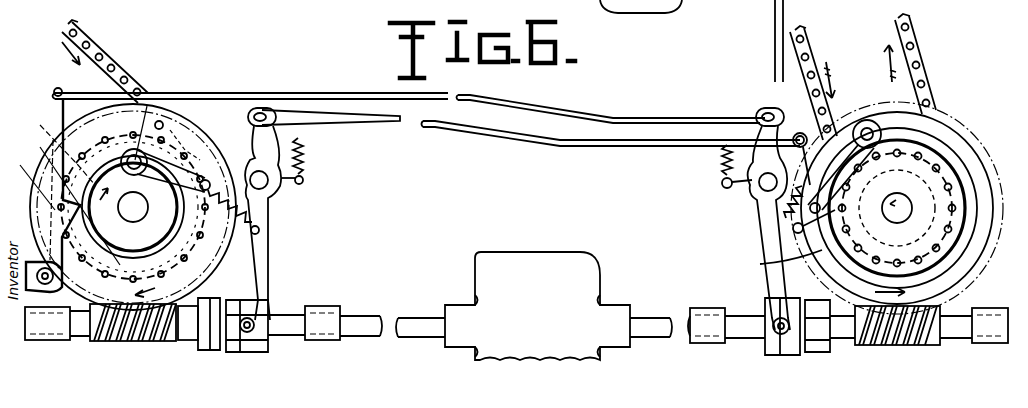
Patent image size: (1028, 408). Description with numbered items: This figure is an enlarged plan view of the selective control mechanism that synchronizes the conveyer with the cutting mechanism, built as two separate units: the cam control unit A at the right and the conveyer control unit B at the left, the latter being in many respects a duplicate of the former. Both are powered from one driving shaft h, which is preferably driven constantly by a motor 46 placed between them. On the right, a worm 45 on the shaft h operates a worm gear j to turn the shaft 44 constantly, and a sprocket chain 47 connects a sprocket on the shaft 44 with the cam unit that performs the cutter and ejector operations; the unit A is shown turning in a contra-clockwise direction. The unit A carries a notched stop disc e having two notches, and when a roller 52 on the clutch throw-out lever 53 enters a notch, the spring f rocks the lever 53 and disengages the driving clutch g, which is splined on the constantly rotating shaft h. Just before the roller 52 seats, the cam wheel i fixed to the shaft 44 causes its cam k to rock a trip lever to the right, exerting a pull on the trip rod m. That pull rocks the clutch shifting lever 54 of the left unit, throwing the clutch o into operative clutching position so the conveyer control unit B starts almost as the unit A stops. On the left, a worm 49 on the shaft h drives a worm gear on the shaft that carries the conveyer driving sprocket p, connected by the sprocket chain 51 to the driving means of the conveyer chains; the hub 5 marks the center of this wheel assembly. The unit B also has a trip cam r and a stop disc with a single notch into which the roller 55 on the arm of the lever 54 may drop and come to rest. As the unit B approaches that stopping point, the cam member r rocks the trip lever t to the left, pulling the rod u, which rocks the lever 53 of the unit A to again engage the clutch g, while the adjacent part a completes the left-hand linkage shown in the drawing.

The shaft hub 5 is at (133, 207).
The shaft 44 is at (925, 212).
The worm 45 is at (905, 340).
The motor 46 is at (537, 306).
The sprocket chain 47 is at (915, 45).
The worm 49 is at (132, 342).
The sprocket chain 51 is at (135, 80).
The roller 52 is at (865, 120).
The clutch throw-out lever 53 is at (752, 210).
The clutch shifting lever 54 is at (270, 208).
The roller 55 is at (145, 125).
The rod u is at (308, 95).
The trip lever t is at (50, 106).
The conveyer driving sprocket p is at (45, 128).
The trip cam r is at (70, 170).
The arm a is at (45, 176).
The conveyer control unit B is at (307, 113).
The clutch o is at (268, 300).
The driving shaft h is at (365, 320).
The trip rod m is at (527, 145).
The spring f is at (722, 160).
The cam k is at (758, 248).
The cam wheel i is at (760, 264).
The driving clutch g is at (762, 296).
The cam control unit A is at (875, 83).
The notched stop disc e is at (925, 150).
The worm gear j is at (998, 150).